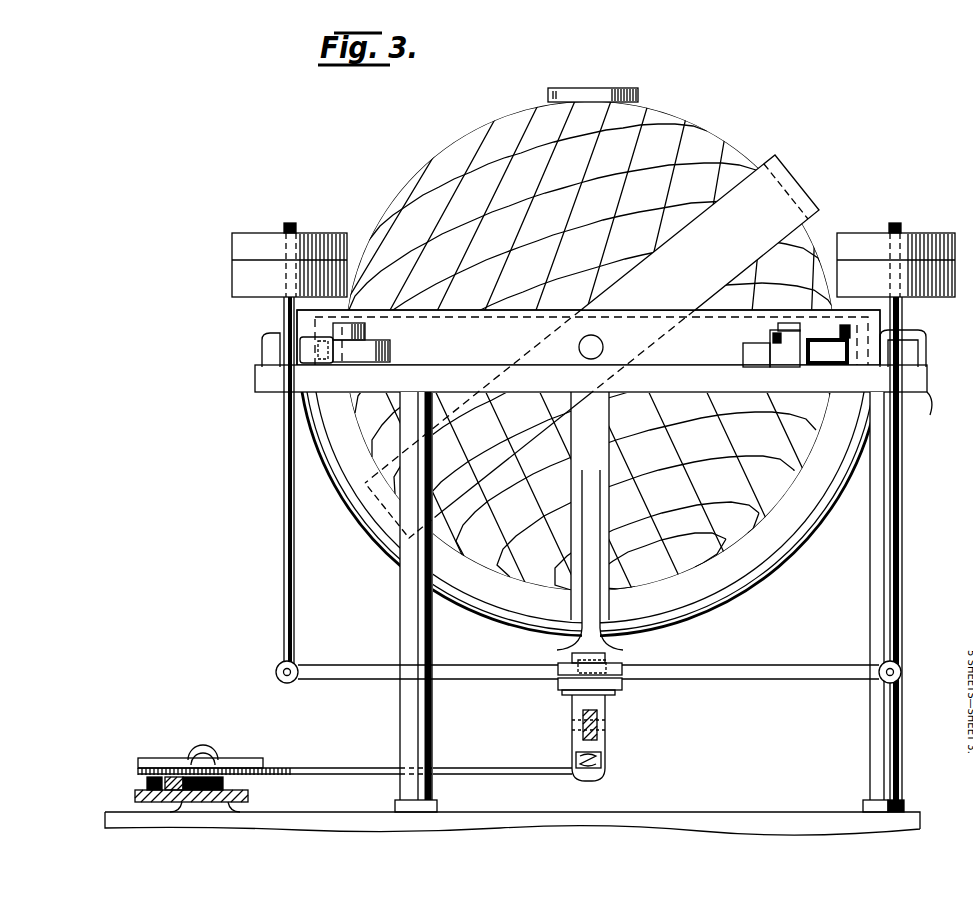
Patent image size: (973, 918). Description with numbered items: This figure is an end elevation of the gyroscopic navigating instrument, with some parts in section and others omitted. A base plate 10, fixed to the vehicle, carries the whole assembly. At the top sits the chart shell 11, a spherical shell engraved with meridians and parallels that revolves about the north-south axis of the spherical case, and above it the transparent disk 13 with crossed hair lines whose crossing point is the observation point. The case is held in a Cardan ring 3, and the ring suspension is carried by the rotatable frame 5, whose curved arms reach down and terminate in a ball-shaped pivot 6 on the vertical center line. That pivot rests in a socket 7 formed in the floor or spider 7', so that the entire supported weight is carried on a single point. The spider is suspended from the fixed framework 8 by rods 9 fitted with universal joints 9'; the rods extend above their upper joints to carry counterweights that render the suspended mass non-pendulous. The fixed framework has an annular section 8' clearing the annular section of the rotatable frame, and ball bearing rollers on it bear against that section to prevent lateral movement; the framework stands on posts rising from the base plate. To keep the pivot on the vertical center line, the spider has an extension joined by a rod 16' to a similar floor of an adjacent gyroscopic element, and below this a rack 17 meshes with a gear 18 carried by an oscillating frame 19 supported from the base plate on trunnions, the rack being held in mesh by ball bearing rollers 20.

The Cardan ring 3 is at (592, 346).
The rotatable frame 5 is at (588, 480).
The pivot 6 is at (607, 648).
The socket 7 is at (567, 657).
The floor or spider 7' is at (588, 653).
The fixed framework 8 is at (939, 408).
The annular section 8' is at (563, 368).
The rods 9 is at (604, 554).
The universal joints 9' is at (575, 494).
The base plate 10 is at (705, 812).
The chart shell 11 is at (443, 150).
The transparent disk 13 is at (612, 88).
The rod 16' is at (616, 738).
The racks 17 is at (293, 767).
The gear 18 is at (217, 782).
The frame 19 is at (212, 760).
The ball bearing rollers 20 is at (143, 783).